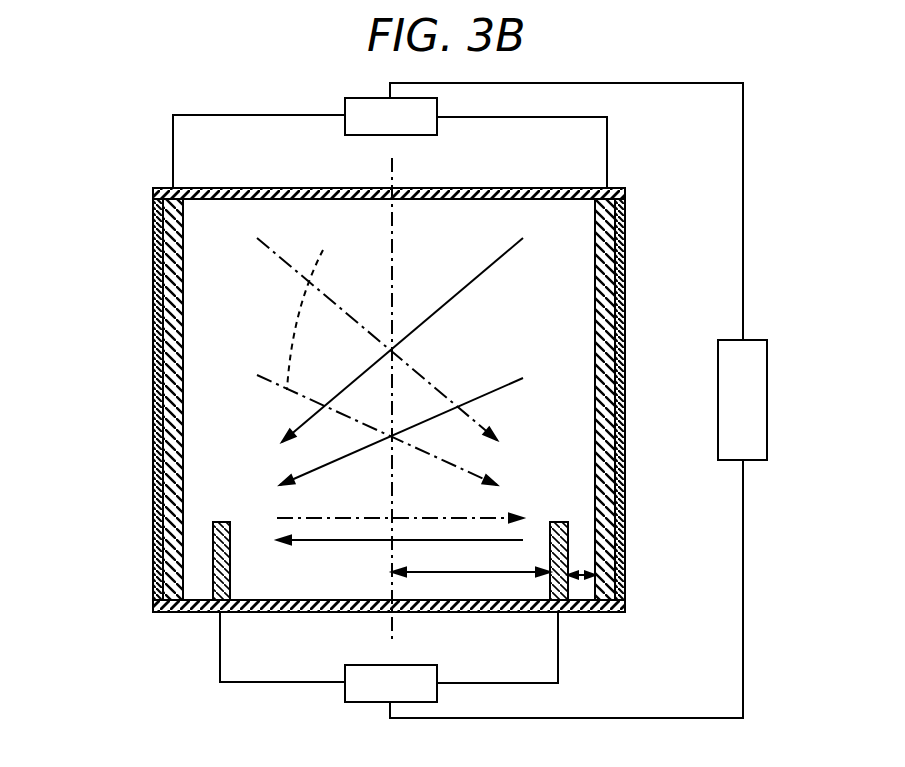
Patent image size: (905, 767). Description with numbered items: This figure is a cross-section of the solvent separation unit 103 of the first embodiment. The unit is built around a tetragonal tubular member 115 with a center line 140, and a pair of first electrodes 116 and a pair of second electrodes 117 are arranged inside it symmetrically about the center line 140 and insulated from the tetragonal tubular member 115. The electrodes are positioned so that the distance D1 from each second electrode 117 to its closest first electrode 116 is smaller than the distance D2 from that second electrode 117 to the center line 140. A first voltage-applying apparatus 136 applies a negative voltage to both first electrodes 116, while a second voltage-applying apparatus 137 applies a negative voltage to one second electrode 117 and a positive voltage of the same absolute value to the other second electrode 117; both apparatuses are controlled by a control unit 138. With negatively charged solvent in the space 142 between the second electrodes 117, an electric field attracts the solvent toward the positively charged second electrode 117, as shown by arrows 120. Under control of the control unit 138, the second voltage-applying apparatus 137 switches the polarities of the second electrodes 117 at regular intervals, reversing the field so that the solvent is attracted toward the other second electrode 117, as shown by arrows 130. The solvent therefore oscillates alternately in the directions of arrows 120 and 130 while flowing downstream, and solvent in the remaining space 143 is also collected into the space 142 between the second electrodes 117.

The solvent separation unit 103 is at (146, 173).
The tetragonal tubular member 115 is at (620, 318).
The first electrodes 116 is at (158, 410).
The second electrodes 117 is at (222, 522).
The arrows 120 is at (458, 293).
The arrows 130 is at (298, 262).
The first voltage-applying apparatus 136 is at (362, 98).
The second voltage-applying apparatus 137 is at (362, 666).
The control unit 138 is at (768, 405).
The center line 140 is at (392, 266).
The space (region) 142 is at (245, 572).
The space (region) 143 is at (195, 224).
The distance D1 is at (580, 578).
The distance D2 is at (468, 575).